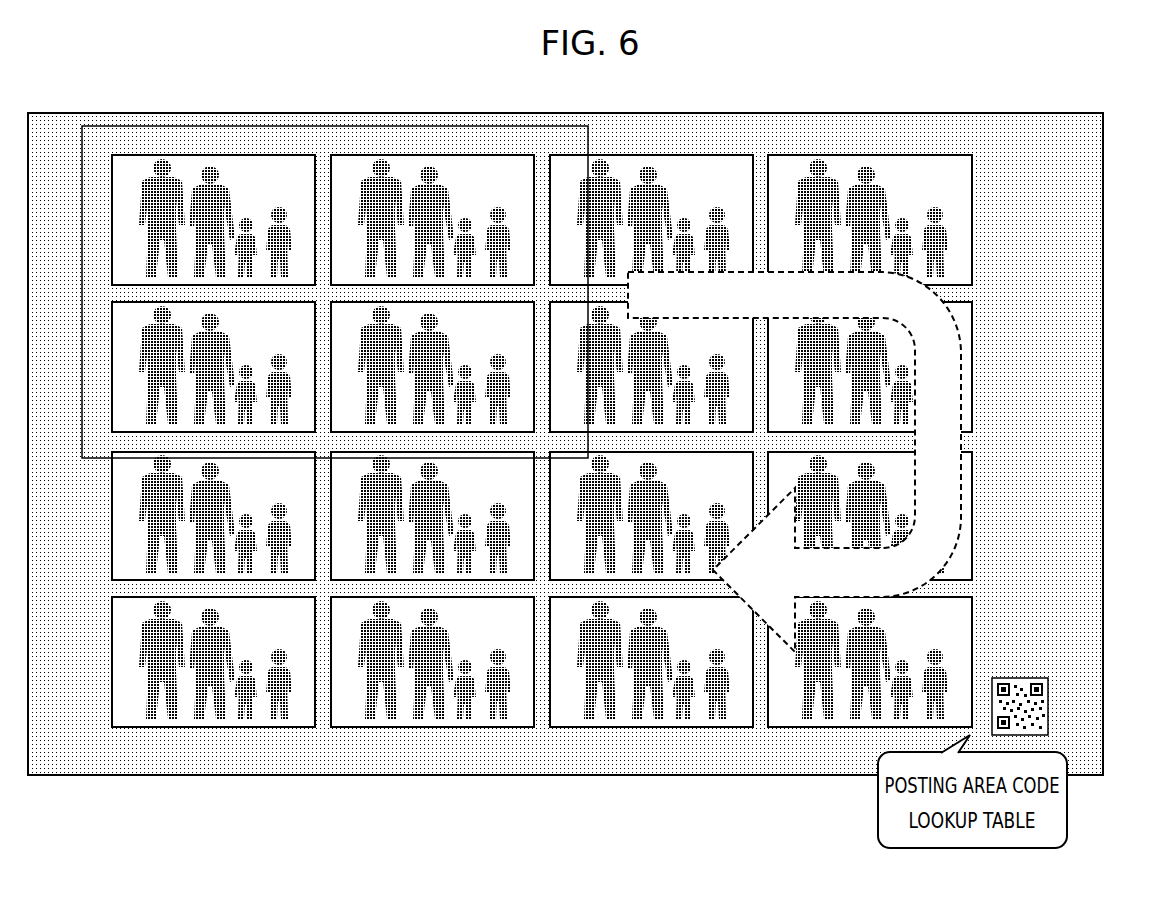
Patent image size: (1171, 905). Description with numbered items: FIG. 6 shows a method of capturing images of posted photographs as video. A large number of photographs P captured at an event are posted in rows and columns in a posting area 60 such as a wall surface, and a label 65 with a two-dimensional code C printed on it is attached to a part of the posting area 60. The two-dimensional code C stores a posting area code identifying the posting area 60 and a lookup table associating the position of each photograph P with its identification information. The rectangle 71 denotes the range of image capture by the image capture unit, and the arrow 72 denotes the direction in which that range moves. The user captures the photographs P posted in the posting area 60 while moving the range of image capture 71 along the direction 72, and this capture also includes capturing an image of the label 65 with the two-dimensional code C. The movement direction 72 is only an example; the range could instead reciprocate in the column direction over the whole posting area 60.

The posting area 60 is at (1103, 168).
The photograph P is at (972, 214).
The range of image capture 71 is at (502, 126).
The direction in which the range of image capture moves 72 is at (963, 437).
The label 65 is at (1048, 702).
The two-dimensional code C is at (1040, 718).